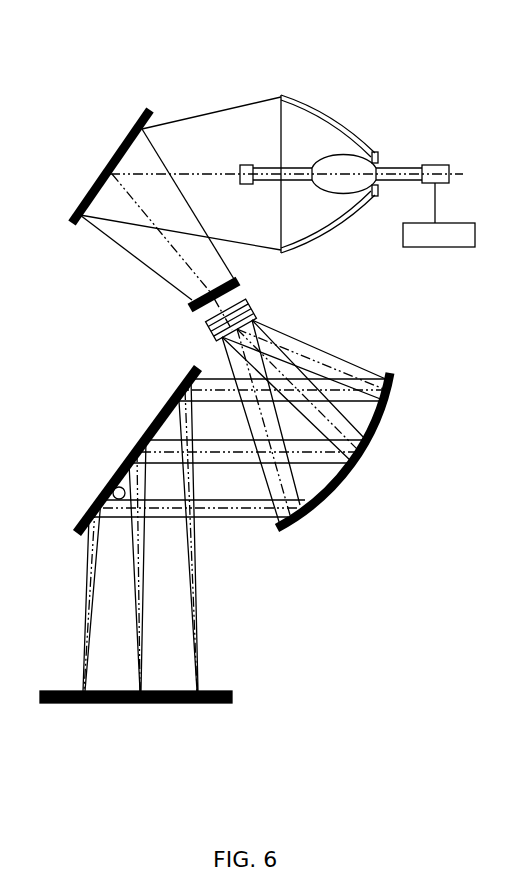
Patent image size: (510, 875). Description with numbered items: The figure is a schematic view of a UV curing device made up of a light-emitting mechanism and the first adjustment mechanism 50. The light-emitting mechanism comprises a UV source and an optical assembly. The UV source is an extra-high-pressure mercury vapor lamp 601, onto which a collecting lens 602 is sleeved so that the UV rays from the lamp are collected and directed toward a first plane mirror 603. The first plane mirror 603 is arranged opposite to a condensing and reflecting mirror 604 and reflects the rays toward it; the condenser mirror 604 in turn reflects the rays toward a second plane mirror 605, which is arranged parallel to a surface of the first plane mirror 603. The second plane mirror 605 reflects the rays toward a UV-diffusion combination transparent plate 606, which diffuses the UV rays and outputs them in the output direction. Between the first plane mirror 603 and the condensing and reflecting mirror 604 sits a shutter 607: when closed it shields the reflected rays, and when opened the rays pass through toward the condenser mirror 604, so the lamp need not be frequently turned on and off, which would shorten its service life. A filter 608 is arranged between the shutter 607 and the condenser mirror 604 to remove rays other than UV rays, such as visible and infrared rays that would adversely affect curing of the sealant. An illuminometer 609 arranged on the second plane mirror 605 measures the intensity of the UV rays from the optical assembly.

The extra-high-pressure mercury vapor lamp 601 is at (332, 153).
The collecting lens 602 is at (366, 146).
The first plane mirror 603 is at (123, 136).
The condensing and reflecting mirror 604 is at (370, 430).
The second plane mirror 605 is at (142, 442).
The UV-diffusion combination transparent plate 606 is at (212, 703).
The shutter 607 is at (188, 311).
The filter 608 is at (257, 305).
The illuminometer 609 is at (113, 486).
The first adjustment mechanism 50 is at (427, 236).